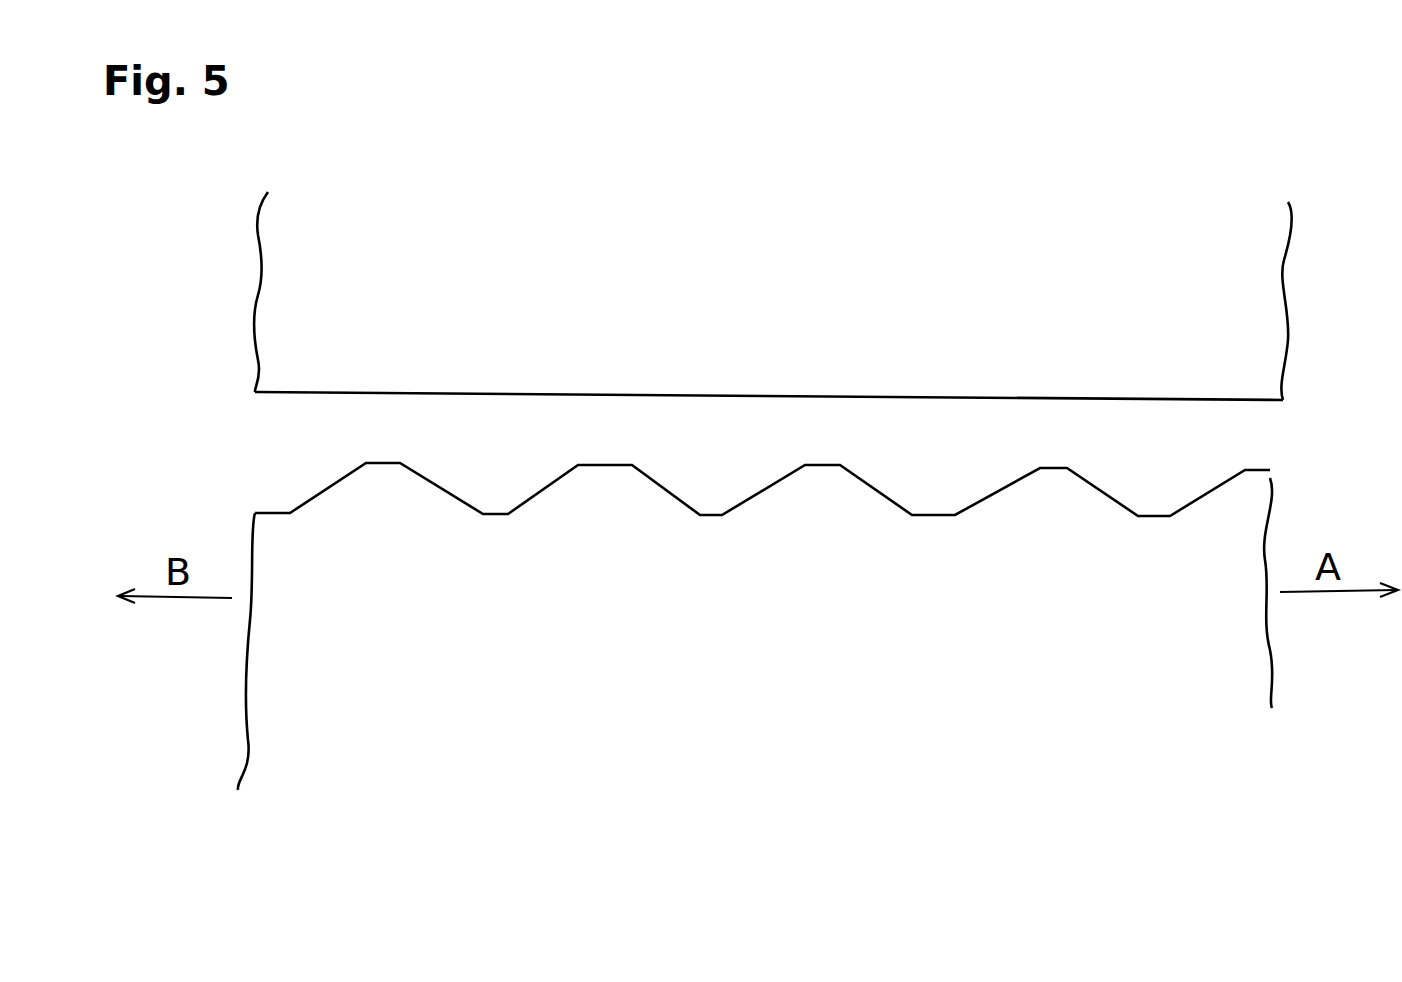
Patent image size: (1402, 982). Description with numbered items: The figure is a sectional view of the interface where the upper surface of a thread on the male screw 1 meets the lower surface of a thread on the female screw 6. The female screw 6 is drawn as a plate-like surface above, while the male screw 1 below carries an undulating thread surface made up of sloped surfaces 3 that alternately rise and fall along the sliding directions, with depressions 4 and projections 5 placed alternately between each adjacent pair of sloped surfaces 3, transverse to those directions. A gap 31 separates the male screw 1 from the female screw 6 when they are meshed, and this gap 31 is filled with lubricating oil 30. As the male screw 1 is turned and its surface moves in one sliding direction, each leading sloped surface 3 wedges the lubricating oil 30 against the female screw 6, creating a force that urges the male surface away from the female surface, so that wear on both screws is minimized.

The male screw 1 is at (755, 634).
The female screw 6 is at (773, 296).
The lubricating oil 30 is at (762, 467).
The gap 31 is at (1262, 405).
The sloped surfaces 3 is at (875, 481).
The depressions 4 is at (936, 512).
The projections 5 is at (820, 466).